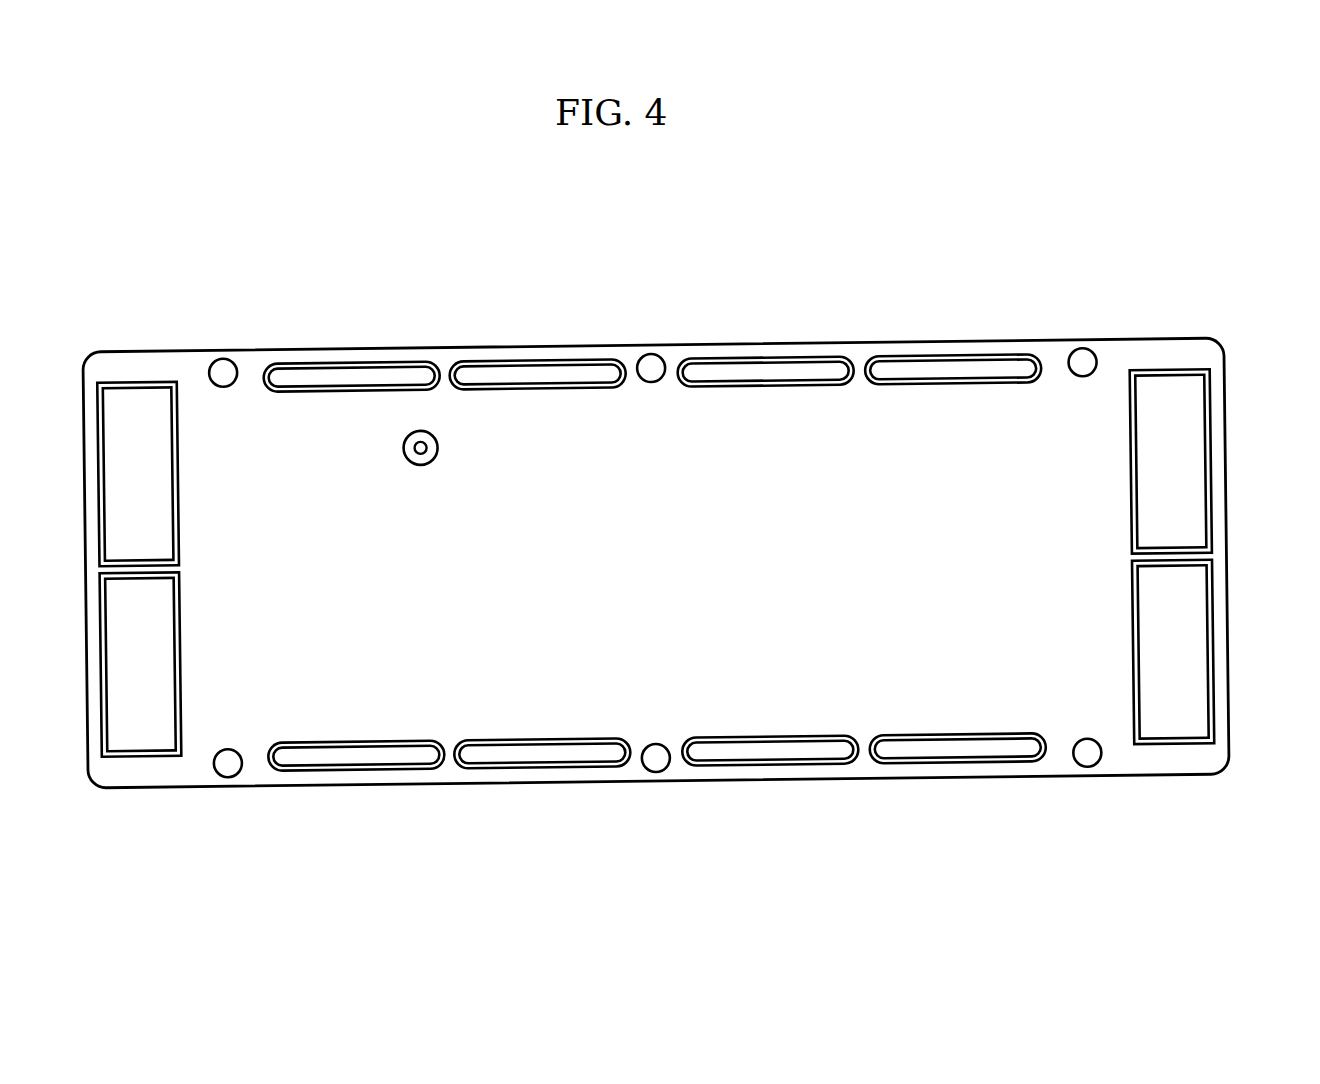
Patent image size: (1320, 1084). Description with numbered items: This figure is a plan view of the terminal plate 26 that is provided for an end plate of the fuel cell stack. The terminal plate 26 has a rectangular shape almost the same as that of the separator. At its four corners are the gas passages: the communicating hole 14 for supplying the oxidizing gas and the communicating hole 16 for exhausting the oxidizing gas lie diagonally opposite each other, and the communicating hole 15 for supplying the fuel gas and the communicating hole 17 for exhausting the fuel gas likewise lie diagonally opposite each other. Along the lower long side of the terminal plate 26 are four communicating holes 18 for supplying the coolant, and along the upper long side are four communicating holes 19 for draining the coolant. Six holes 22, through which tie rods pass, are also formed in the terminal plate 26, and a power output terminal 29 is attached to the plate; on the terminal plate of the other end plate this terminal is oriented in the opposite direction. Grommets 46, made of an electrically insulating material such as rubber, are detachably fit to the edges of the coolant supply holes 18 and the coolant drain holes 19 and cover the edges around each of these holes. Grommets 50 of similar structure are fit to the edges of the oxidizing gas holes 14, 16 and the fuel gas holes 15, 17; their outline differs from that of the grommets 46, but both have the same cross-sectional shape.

The terminal plate 26 is at (806, 288).
The hole 22 is at (650, 366).
The power output terminal 29 is at (438, 448).
The communicating hole for draining the coolant 19 is at (334, 372).
The communicating hole for supplying the coolant 18 is at (362, 757).
The grommet 46 is at (836, 357).
The communicating hole for supplying the oxidizing gas 14 is at (1190, 441).
The communicating hole for supplying the fuel gas 15 is at (120, 470).
The communicating hole for exhausting the oxidizing gas 16 is at (120, 628).
The communicating hole for exhausting the fuel gas 17 is at (1190, 636).
The grommet 50 is at (100, 518).